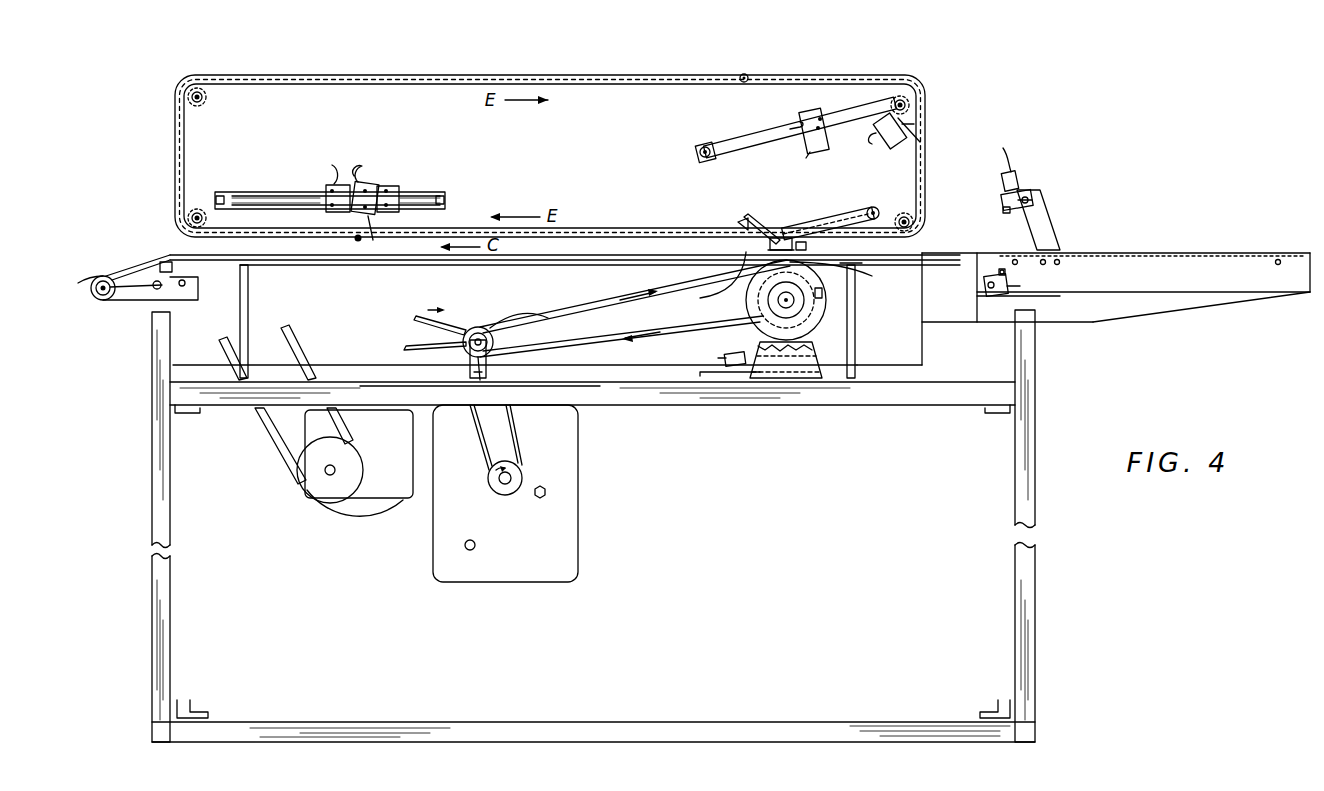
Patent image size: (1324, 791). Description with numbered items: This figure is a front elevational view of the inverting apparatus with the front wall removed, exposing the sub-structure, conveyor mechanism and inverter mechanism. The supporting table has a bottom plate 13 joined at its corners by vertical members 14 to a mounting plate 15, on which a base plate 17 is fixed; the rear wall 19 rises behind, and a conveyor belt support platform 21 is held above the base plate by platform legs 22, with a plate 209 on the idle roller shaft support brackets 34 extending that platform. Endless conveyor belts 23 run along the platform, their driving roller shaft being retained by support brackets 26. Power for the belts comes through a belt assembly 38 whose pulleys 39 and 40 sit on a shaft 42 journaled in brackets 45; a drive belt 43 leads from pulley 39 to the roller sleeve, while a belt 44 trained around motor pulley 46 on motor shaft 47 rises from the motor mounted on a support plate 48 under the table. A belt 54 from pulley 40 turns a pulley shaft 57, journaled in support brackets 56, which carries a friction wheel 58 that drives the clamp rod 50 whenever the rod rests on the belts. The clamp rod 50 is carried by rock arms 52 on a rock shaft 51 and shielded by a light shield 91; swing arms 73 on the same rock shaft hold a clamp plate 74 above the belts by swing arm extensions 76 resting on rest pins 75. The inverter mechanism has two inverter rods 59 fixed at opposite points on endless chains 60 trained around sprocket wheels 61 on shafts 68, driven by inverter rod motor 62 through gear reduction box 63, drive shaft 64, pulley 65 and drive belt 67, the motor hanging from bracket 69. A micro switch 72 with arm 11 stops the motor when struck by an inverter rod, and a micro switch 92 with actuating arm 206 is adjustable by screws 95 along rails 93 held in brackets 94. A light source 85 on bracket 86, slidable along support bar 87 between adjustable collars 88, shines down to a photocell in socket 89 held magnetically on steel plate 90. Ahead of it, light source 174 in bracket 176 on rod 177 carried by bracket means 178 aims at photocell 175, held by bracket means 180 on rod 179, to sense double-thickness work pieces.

The arm 11 is at (922, 136).
The bottom plate 13 is at (555, 722).
The vertical members 14 is at (166, 641).
The mounting plate 15 is at (925, 405).
The base plate 17 is at (638, 405).
The rear wall 19 is at (354, 184).
The conveyor belt support platform 21 is at (328, 266).
The platform legs 22 is at (240, 321).
The conveyor belts 23 is at (610, 255).
The support brackets 26 is at (120, 280).
The idle roller shaft support brackets 34 is at (1150, 284).
The belt assembly 38 is at (468, 328).
The pulley 39 is at (528, 312).
The pulley 40 is at (481, 326).
The shaft 42 is at (488, 344).
The drive belt 43 is at (420, 350).
The belt 44 is at (515, 437).
The brackets 45 is at (472, 380).
The motor pulley 46 is at (522, 474).
The motor shaft 47 is at (440, 333).
The support plate 48 is at (517, 551).
The clamp rod 50 is at (778, 236).
The rock shaft 51 is at (876, 210).
The rock arms 52 is at (870, 262).
The belt 54 is at (588, 304).
The support brackets 56 is at (786, 360).
The pulley shaft 57 is at (795, 310).
The friction wheel 58 is at (786, 297).
The inverter rods 59 is at (744, 73).
The endless chains 60 is at (570, 77).
The sprocket wheels 61 is at (201, 104).
The inverter rod motor 62 is at (372, 520).
The gear reduction box 63 is at (375, 451).
The drive shaft 64 is at (325, 474).
The pulley 65 is at (350, 471).
The drive belt 67 is at (278, 446).
The shafts 68 is at (197, 90).
The bracket 69 is at (316, 426).
The micro switch 72 is at (905, 128).
The swing arms 73 is at (826, 220).
The clamp plate 74 is at (718, 268).
The rest pins 75 is at (738, 224).
The swing arm extensions 76 is at (750, 216).
The light source 85 is at (818, 111).
The bracket 86 is at (845, 106).
The support bar 87 is at (697, 156).
The adjustable collars 88 is at (708, 146).
The socket 89 is at (738, 366).
The steel plate 90 is at (680, 370).
The light shield 91 is at (802, 240).
The micro switch 92 is at (367, 184).
The rails 93 is at (418, 192).
The brackets 94 is at (221, 196).
The screws 95 is at (331, 190).
The light source 174 is at (1018, 172).
The photocell 175 is at (1001, 270).
The bracket 176 is at (1030, 192).
The rod 177 is at (1034, 200).
The bracket means 178 is at (1048, 232).
The rod 179 is at (984, 283).
The bracket means 180 is at (1008, 284).
The switch actuating arm 206 is at (374, 232).
The plate 209 is at (1180, 253).